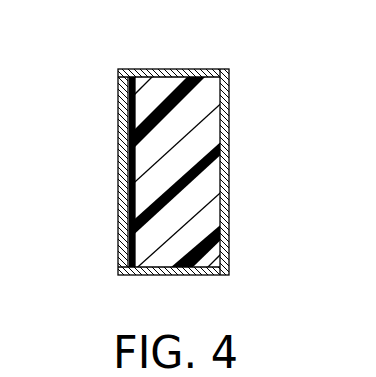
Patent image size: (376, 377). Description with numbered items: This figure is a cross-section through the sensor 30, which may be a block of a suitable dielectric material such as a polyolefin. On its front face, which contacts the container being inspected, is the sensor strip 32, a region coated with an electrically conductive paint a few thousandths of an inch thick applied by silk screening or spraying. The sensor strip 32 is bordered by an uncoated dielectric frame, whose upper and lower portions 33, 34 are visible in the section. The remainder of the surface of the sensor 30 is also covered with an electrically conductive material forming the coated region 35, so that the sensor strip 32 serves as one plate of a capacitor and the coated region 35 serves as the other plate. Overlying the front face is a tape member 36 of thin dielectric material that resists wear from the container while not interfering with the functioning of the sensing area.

The sensor 30 is at (200, 124).
The sensor strip 32 is at (127, 173).
The upper portion of dielectric frame 33 is at (126, 110).
The lower portion of dielectric frame 34 is at (120, 232).
The coated region 35 is at (173, 70).
The tape member 36 is at (118, 88).